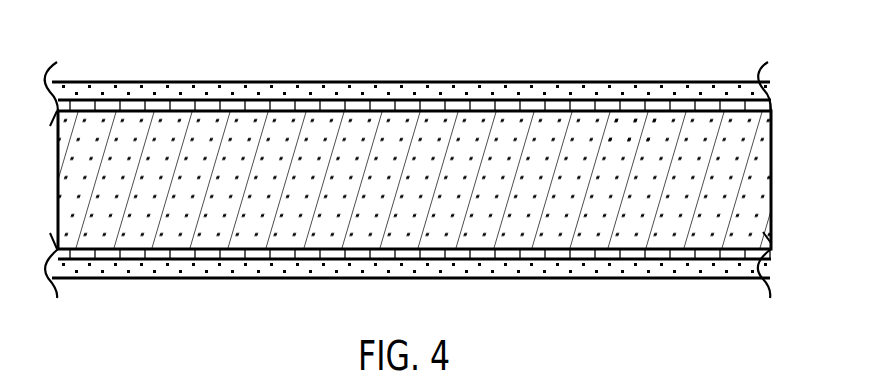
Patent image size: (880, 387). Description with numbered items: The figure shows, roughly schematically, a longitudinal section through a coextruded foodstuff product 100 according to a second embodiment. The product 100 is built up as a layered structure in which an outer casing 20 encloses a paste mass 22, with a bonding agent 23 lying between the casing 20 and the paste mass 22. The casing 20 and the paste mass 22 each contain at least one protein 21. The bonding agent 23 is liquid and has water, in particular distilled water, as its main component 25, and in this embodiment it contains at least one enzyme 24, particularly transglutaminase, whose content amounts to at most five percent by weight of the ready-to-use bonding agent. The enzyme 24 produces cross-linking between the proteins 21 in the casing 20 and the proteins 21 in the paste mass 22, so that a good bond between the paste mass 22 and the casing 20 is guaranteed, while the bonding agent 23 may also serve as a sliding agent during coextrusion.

The laminated sheet structure 100 is at (121, 60).
The casing 20 is at (333, 82).
The protein 21 is at (518, 92).
The paste mass 22 is at (292, 225).
The bonding agent 23 is at (213, 255).
The enzyme 24 is at (717, 253).
The main component 25 is at (720, 97).